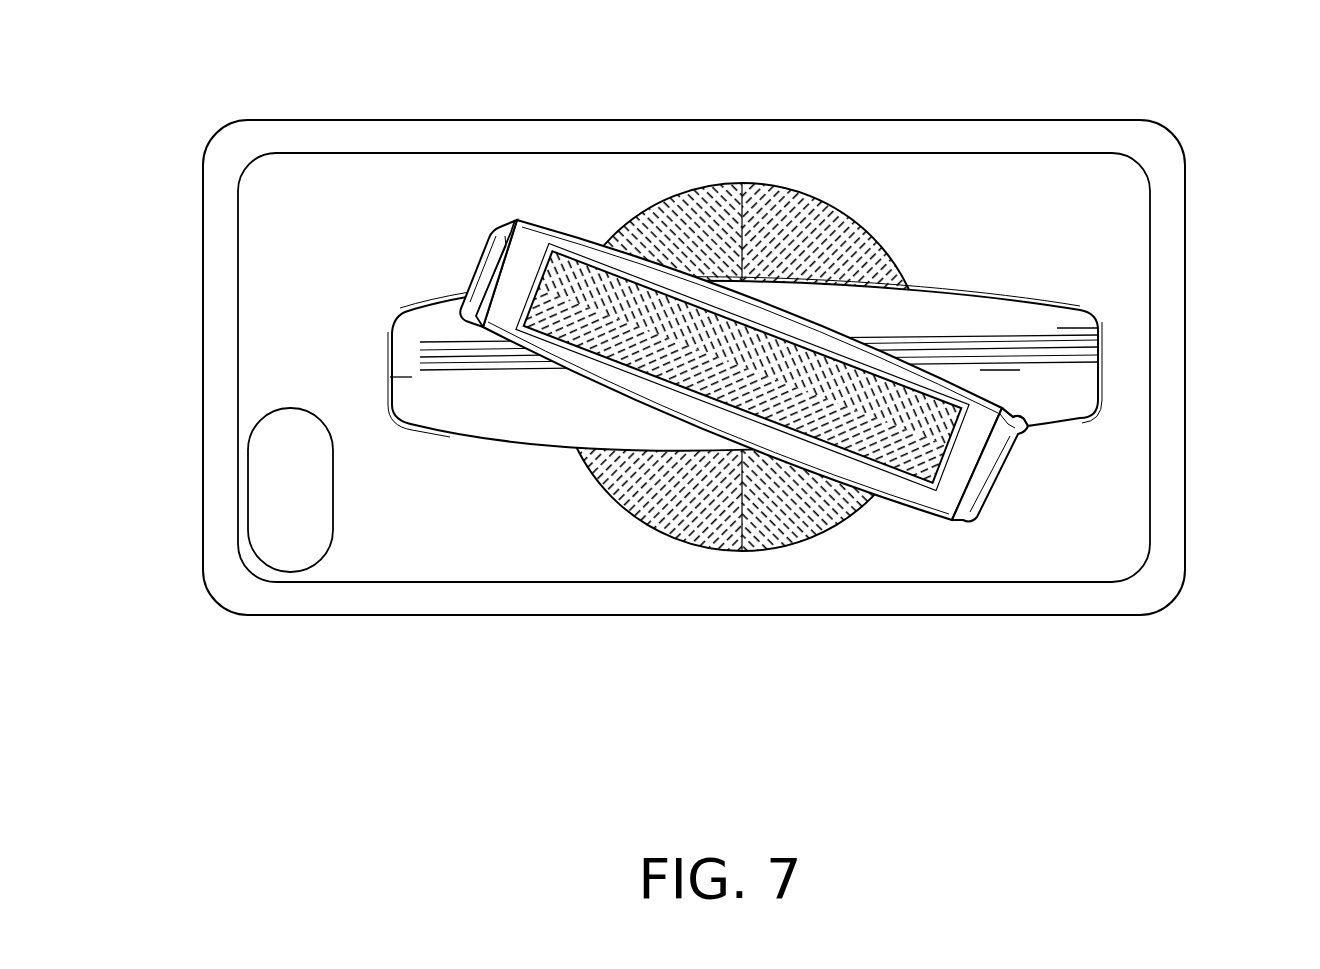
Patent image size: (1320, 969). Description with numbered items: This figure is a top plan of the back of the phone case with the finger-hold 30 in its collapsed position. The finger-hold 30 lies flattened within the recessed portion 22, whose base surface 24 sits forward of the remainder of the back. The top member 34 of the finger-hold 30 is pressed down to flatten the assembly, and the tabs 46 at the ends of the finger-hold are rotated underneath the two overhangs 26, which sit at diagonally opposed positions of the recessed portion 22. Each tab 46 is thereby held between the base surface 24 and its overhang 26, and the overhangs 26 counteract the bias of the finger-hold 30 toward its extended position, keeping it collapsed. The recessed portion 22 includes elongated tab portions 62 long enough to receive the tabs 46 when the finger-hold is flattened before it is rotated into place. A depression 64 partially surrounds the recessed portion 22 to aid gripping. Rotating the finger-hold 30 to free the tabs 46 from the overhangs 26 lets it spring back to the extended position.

The recessed portion 22 is at (701, 257).
The base surface 24 is at (623, 430).
The overhang 26 is at (492, 245).
The finger-hold 30 is at (913, 363).
The top member 34 is at (547, 347).
The tab 46 is at (515, 213).
The tab portion 62 is at (403, 396).
The depression 64 is at (840, 223).